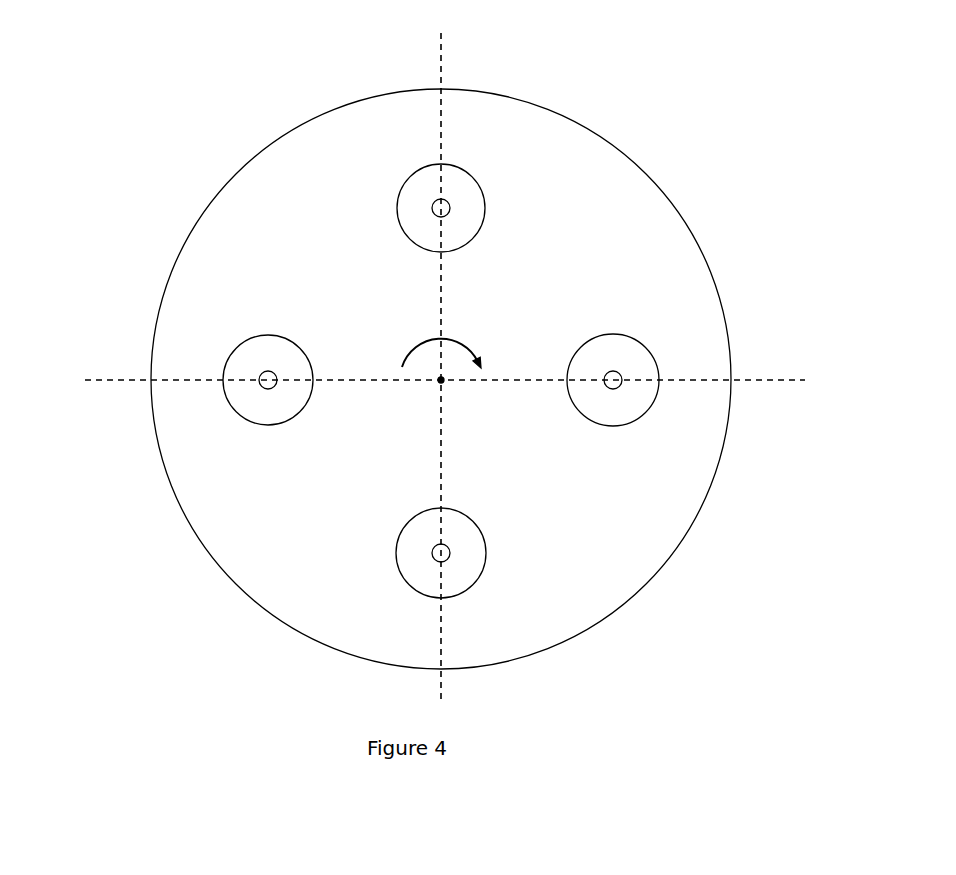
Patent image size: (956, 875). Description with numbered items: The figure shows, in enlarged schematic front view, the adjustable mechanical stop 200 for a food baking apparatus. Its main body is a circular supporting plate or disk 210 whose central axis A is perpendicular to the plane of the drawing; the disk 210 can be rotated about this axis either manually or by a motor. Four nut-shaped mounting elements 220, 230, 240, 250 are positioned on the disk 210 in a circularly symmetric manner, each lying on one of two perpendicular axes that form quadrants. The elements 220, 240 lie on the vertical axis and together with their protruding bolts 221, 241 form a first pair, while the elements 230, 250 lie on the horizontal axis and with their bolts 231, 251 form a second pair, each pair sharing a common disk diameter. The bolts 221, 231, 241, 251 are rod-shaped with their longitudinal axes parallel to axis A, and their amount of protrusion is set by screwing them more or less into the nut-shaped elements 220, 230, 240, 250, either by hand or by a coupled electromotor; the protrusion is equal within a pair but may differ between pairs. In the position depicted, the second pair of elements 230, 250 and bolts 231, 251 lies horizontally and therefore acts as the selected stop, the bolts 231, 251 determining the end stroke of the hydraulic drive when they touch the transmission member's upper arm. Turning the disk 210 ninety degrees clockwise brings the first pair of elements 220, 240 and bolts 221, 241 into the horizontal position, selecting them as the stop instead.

The adjustable mechanical stop 200 is at (660, 117).
The supporting plate or disk 210 is at (720, 458).
The nut-shaped mounting element 220 is at (417, 592).
The protruding bolt 221 is at (433, 547).
The nut-shaped mounting element 230 is at (232, 407).
The protruding bolt 231 is at (267, 371).
The nut-shaped mounting element 240 is at (410, 167).
The protruding bolt 241 is at (432, 208).
The nut-shaped mounting element 250 is at (620, 334).
The protruding bolt 251 is at (620, 373).